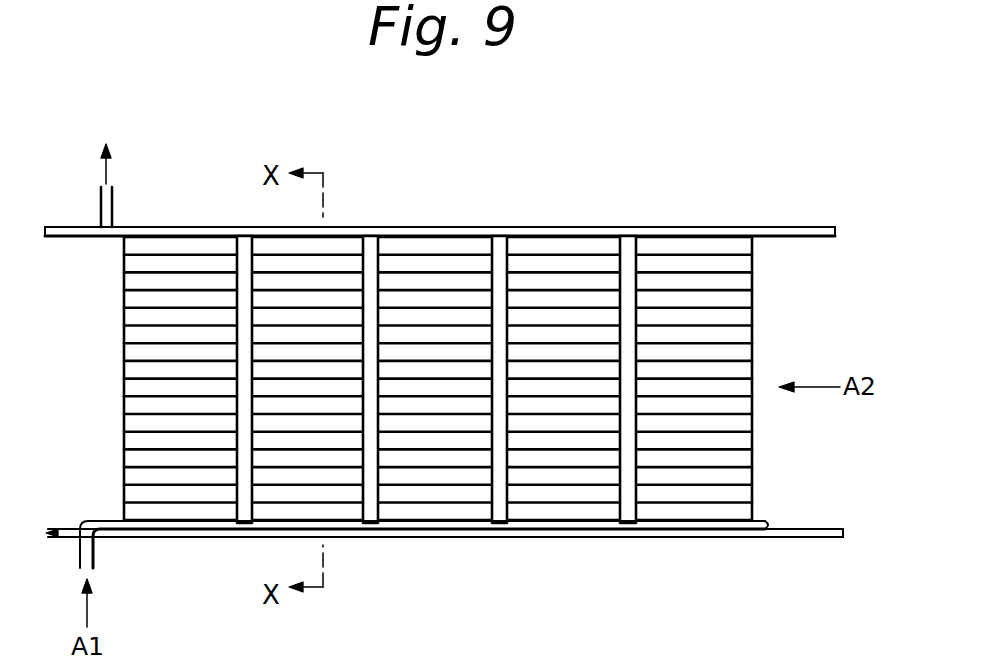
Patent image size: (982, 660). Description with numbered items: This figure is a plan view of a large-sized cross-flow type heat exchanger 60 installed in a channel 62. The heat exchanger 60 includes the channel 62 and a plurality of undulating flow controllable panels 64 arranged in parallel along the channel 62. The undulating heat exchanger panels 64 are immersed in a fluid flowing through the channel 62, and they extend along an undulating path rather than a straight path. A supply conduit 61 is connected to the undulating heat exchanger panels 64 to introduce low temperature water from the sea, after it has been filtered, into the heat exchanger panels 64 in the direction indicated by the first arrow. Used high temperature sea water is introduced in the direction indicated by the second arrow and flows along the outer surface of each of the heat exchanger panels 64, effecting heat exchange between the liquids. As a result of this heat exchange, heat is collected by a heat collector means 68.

The heat exchanger 60 is at (668, 150).
The supply conduit 61 is at (593, 539).
The channel 62 is at (795, 537).
The undulating flow controllable panels 64 is at (550, 278).
The heat collector means 68 is at (617, 227).